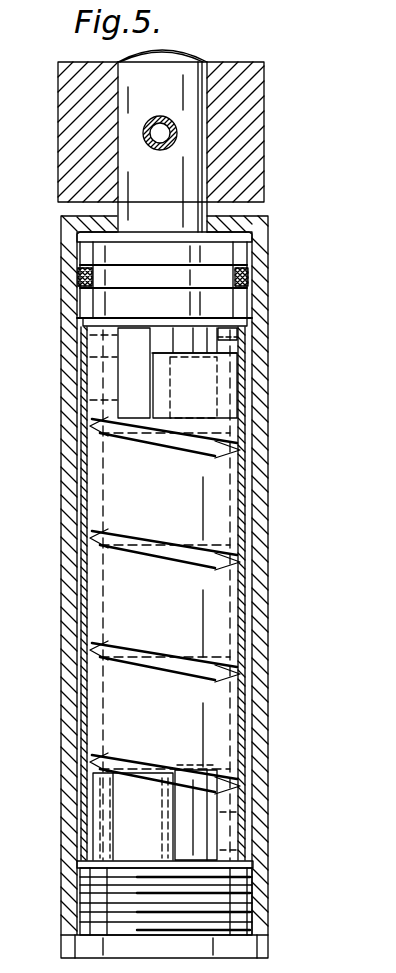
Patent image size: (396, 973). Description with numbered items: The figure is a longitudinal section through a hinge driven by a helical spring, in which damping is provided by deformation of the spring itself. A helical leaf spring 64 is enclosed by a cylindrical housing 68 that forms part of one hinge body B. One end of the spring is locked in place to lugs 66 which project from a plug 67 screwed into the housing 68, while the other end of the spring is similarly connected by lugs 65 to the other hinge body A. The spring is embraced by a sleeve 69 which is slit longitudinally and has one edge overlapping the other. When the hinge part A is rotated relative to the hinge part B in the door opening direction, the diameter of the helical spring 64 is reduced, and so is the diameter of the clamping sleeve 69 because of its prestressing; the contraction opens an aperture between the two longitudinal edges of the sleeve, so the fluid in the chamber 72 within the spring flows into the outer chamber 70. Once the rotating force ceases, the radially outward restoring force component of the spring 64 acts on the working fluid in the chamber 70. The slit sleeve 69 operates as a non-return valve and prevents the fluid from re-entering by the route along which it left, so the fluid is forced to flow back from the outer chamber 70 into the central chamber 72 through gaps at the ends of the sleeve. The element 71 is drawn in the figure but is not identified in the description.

The hinge body A is at (267, 98).
The hinge body B is at (170, 587).
The helical leaf spring 64 is at (117, 488).
The lugs 65 is at (127, 365).
The lugs 66 is at (207, 835).
The plug 67 is at (245, 902).
The cylindrical housing 68 is at (70, 727).
The sleeve 69 is at (247, 513).
The outer chamber 70 is at (83, 592).
The stop element 71 is at (232, 333).
The chamber 72 is at (238, 446).